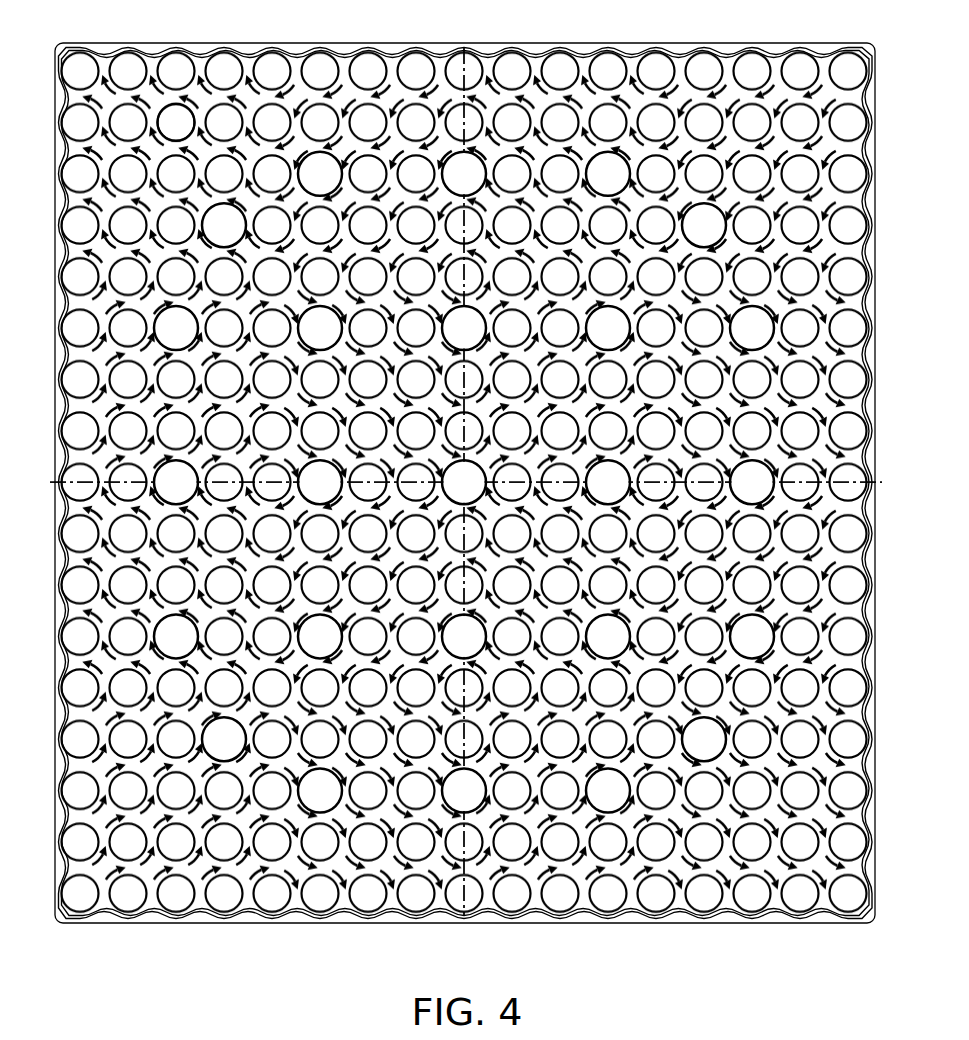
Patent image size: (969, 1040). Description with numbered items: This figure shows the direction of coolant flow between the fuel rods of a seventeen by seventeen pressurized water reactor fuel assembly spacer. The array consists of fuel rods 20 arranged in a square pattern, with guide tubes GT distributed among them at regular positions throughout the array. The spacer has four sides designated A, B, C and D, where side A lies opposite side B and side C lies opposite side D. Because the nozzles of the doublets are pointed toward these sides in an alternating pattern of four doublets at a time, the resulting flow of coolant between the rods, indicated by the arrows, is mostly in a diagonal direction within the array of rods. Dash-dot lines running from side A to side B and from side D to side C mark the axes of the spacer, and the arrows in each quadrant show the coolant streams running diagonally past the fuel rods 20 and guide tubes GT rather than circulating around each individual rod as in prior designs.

The fuel rod 20 is at (167, 132).
The guide tube GT is at (464, 482).
The side A is at (467, 459).
The side B is at (469, 502).
The side C is at (478, 483).
The side D is at (455, 483).